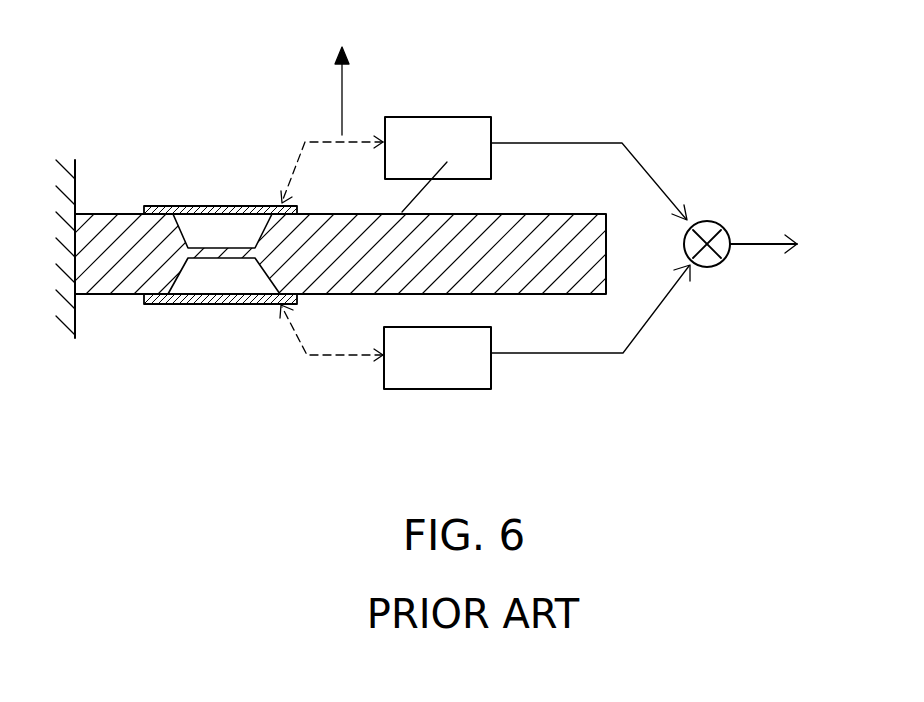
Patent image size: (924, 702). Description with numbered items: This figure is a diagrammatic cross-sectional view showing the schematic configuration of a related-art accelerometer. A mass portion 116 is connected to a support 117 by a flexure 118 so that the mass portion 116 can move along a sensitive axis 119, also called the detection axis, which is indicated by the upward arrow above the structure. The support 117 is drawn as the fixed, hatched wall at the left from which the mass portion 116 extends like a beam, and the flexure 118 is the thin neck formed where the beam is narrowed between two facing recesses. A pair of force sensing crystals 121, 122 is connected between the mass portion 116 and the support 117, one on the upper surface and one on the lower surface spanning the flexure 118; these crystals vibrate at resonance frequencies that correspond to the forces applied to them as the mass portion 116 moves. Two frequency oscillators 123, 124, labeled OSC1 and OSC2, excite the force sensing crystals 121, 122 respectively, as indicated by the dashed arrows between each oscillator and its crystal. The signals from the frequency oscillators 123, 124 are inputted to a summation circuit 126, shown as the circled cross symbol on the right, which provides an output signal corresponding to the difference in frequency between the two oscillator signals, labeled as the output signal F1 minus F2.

The mass portion 116 is at (541, 214).
The support 117 is at (95, 283).
The flexure 118 is at (215, 250).
The sensitive axis 119 is at (342, 98).
The force sensing crystal 121 is at (155, 207).
The force sensing crystal 122 is at (210, 306).
The frequency oscillator 123 is at (475, 116).
The frequency oscillator 124 is at (475, 390).
The summation circuit 126 is at (705, 221).